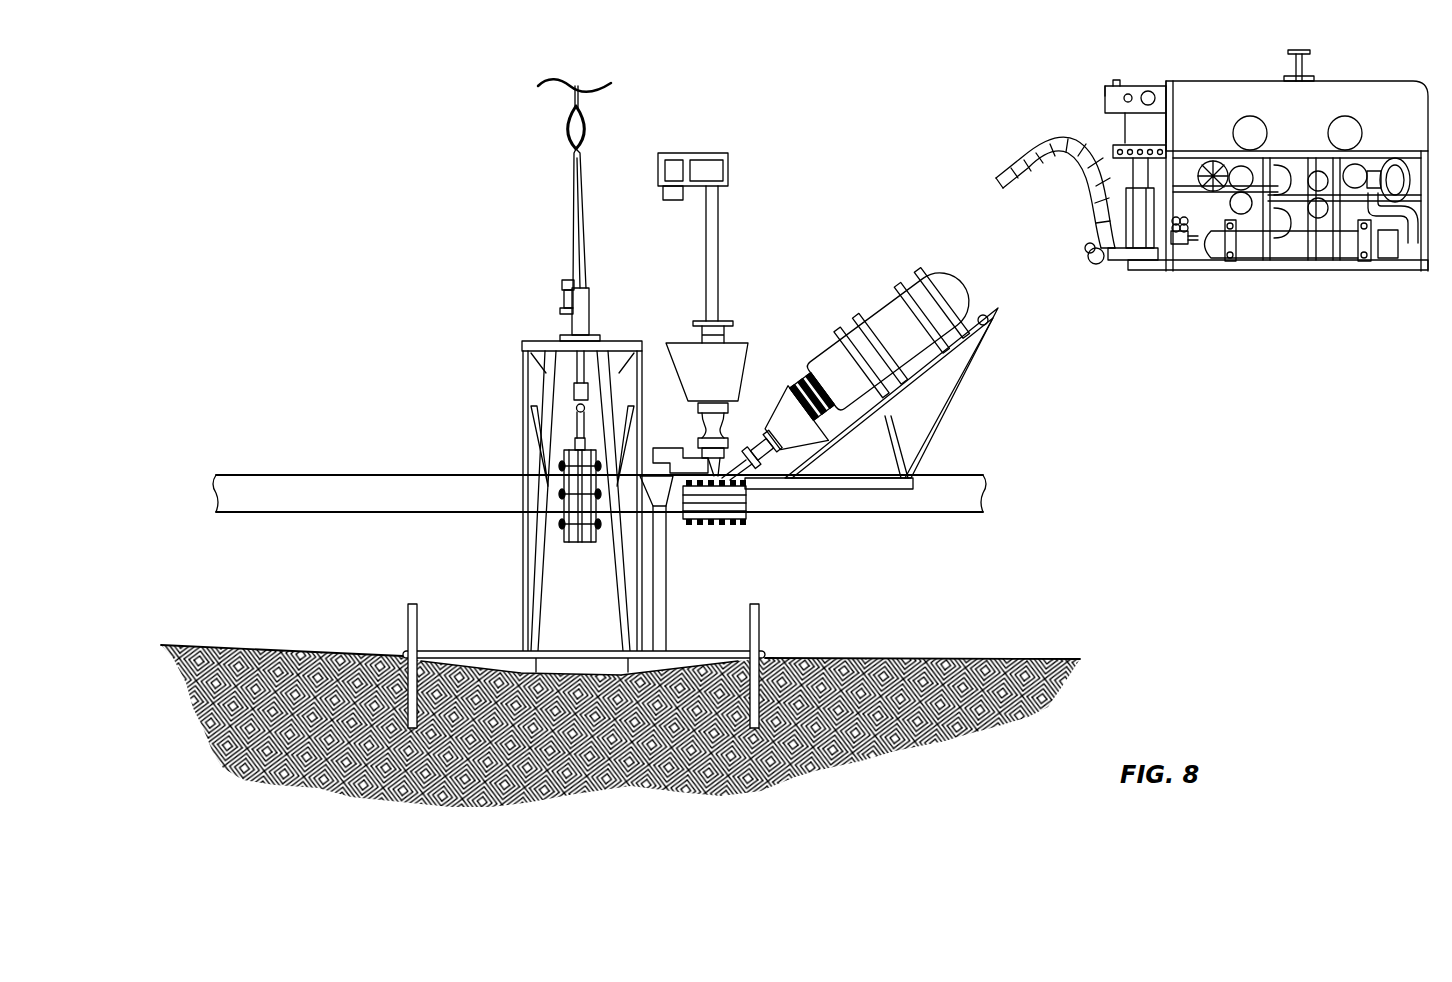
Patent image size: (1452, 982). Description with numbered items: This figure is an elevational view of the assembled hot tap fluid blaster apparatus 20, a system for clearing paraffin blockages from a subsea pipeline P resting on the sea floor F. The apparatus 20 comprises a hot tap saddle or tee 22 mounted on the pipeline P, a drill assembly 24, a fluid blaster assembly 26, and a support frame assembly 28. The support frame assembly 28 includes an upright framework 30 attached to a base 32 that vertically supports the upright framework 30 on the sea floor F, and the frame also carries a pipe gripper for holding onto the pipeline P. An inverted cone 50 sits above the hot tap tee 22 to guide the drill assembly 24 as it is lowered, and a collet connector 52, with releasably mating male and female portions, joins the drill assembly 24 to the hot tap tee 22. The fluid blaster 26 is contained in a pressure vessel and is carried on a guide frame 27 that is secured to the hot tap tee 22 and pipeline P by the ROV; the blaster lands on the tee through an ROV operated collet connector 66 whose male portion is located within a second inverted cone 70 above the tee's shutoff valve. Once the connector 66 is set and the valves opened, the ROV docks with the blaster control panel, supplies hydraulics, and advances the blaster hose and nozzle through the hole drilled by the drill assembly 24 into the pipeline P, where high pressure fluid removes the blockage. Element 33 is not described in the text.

The hot tap fluid blaster apparatus 20 is at (515, 185).
The hot tap saddle or tee 22 is at (732, 524).
The drill assembly 24 is at (678, 140).
The fluid blaster assembly 26 is at (968, 272).
The guide frame 27 is at (953, 393).
The support frame assembly 28 is at (505, 360).
The upright framework 30 is at (515, 452).
The base 32 is at (753, 640).
The post 33 is at (398, 640).
The inverted cone 50 is at (726, 338).
The collet connector 52 is at (680, 312).
The ROV operated collet connector 66 is at (795, 368).
The inverted cone 70 is at (794, 412).
The pipeline P is at (360, 466).
The sea floor F is at (918, 650).